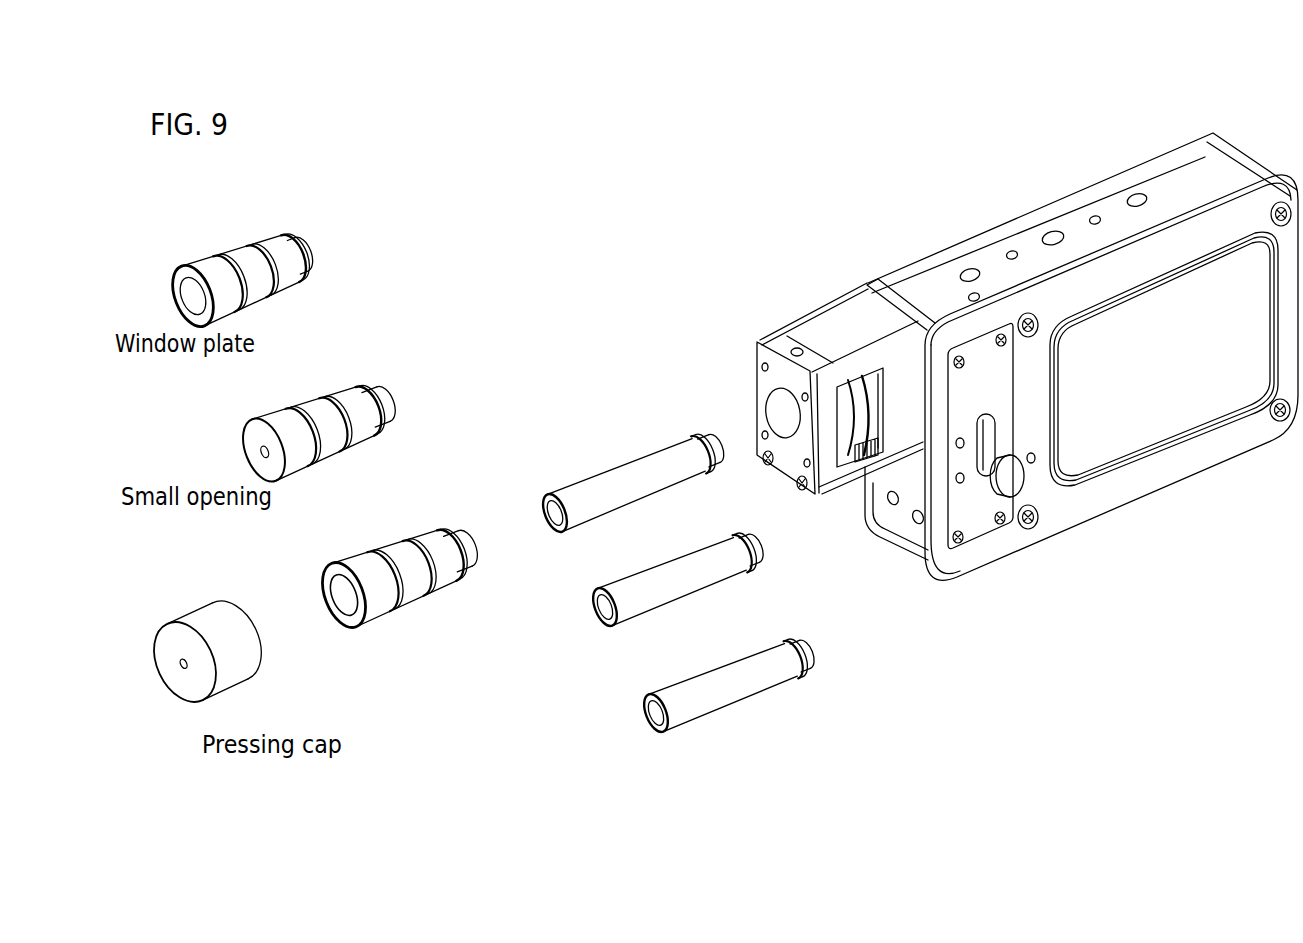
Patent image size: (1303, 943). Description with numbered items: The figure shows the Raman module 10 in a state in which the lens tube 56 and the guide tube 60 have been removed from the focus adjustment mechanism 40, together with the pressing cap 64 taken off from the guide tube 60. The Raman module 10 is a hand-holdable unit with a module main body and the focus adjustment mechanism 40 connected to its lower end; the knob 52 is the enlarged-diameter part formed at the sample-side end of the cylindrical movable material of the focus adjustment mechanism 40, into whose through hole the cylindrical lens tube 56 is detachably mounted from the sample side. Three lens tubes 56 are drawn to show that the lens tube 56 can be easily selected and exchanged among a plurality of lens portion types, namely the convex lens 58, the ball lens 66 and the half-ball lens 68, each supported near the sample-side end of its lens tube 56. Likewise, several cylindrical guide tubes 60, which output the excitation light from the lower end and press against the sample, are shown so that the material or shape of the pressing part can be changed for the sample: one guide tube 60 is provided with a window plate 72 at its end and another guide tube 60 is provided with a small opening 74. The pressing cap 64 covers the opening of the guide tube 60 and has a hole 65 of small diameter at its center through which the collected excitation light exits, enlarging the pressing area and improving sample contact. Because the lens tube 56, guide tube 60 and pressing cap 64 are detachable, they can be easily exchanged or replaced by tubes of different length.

The Raman module 10 is at (957, 202).
The focus adjustment mechanism 40 is at (842, 419).
The knob 52 is at (857, 420).
The lens tube 56 is at (658, 565).
The lens portion 58 is at (585, 613).
The guide tube 60 is at (299, 401).
The pressing cap 64 is at (184, 663).
The hole 65 is at (178, 668).
The ball lens 66 is at (535, 517).
The half-ball lens 68 is at (640, 715).
The window plate 72 is at (178, 294).
The small opening 74 is at (258, 454).